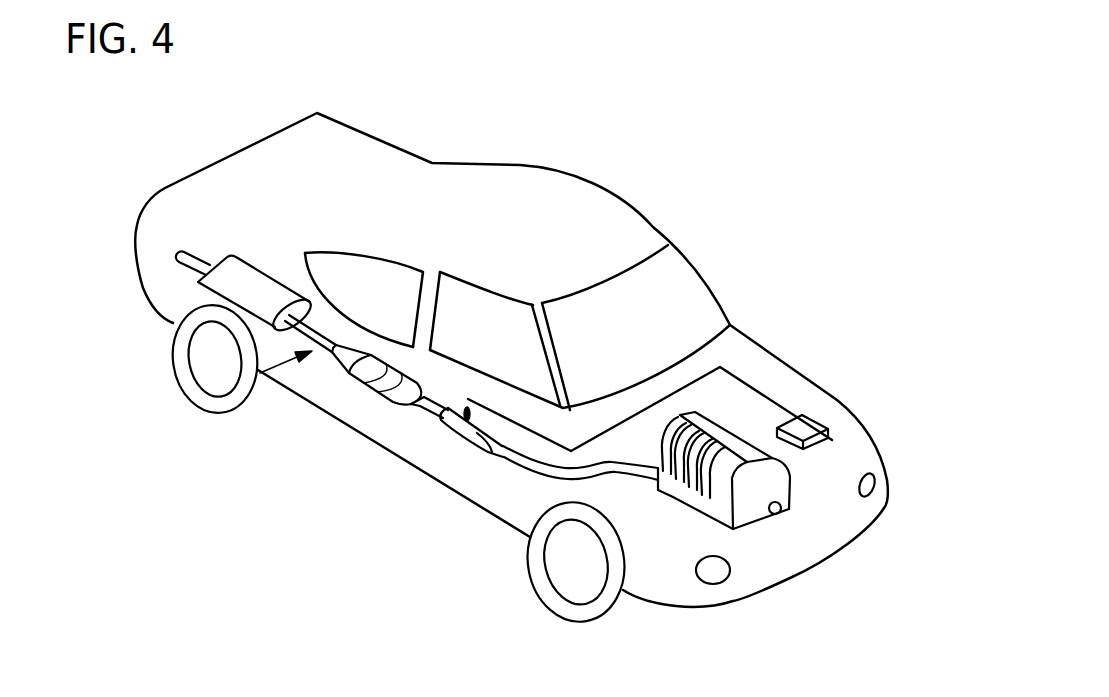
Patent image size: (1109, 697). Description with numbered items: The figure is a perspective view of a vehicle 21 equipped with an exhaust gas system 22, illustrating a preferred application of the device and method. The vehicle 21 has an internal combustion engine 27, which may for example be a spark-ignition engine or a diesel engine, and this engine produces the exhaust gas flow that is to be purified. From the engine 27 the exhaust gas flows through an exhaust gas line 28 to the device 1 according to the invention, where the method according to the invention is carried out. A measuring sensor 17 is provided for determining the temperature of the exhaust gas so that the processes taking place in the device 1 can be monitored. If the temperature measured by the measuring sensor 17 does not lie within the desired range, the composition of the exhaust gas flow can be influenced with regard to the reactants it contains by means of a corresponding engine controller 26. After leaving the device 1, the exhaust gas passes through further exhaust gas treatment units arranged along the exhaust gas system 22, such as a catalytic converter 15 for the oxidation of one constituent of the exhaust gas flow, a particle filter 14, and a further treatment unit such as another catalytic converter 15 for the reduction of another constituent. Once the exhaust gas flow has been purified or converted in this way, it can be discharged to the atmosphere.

The device 1 is at (468, 432).
The particle filter 14 is at (365, 380).
The catalytic converter 15 is at (340, 370).
The measuring sensor 17 is at (467, 408).
The vehicle 21 is at (642, 233).
The exhaust gas system 22 is at (267, 380).
The engine controller 26 is at (802, 428).
The internal combustion engine 27 is at (750, 510).
The exhaust gas line 28 is at (593, 473).